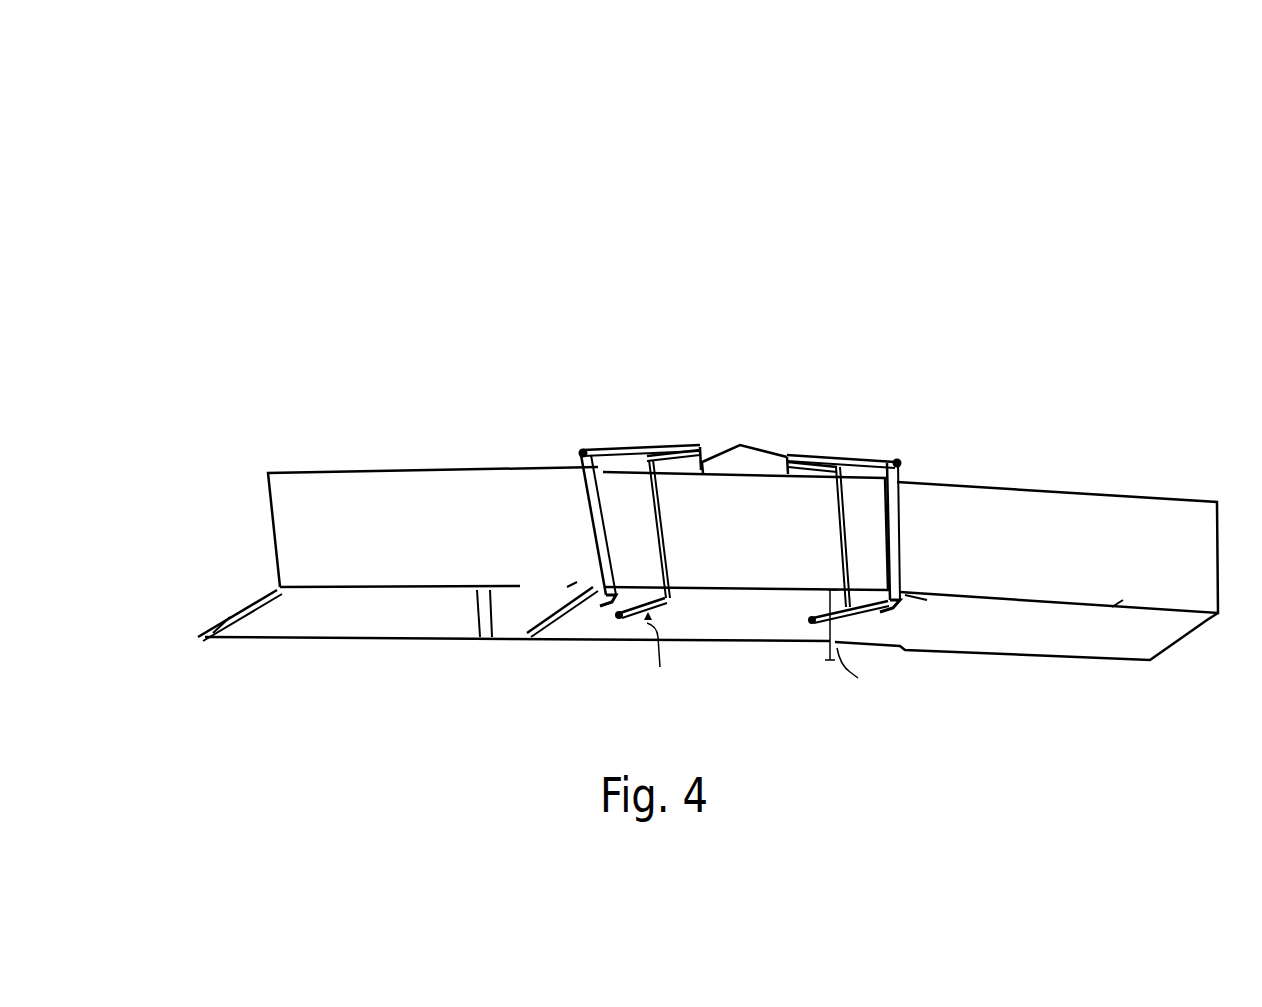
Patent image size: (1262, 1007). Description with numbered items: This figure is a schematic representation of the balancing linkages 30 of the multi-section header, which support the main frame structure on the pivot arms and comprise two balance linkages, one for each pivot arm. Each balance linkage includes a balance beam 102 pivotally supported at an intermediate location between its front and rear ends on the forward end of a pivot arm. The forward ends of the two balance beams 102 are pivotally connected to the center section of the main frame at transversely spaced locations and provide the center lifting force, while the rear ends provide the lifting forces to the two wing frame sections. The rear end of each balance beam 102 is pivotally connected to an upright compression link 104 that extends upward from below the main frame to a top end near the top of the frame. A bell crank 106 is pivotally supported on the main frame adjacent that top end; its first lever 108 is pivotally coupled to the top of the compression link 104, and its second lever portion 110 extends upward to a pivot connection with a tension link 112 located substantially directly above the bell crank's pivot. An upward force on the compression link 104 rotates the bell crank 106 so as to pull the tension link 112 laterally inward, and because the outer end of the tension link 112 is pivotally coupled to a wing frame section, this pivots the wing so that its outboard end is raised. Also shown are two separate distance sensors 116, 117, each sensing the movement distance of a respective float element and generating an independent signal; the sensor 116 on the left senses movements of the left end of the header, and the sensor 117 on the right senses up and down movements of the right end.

The linkages 30 is at (294, 104).
The balance beam 102 is at (699, 660).
The compression link 104 is at (652, 500).
The bell crank 106 is at (720, 317).
The first lever 108 is at (751, 340).
The second lever portion 110 is at (745, 452).
The tension link 112 is at (756, 468).
The distance sensor 116 is at (668, 661).
The distance sensor 117 is at (858, 667).